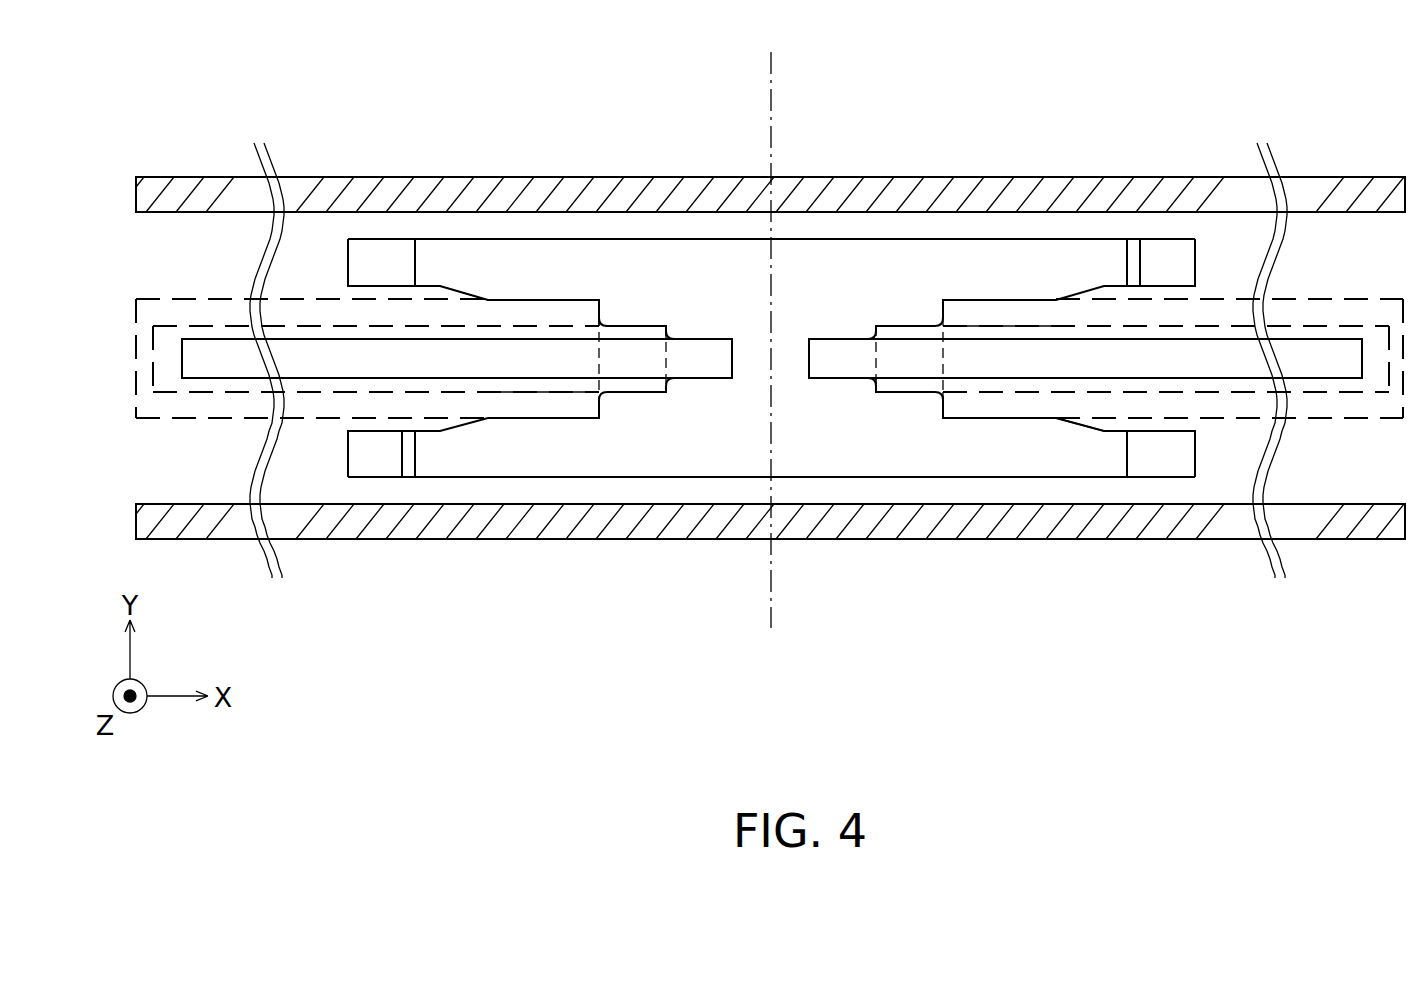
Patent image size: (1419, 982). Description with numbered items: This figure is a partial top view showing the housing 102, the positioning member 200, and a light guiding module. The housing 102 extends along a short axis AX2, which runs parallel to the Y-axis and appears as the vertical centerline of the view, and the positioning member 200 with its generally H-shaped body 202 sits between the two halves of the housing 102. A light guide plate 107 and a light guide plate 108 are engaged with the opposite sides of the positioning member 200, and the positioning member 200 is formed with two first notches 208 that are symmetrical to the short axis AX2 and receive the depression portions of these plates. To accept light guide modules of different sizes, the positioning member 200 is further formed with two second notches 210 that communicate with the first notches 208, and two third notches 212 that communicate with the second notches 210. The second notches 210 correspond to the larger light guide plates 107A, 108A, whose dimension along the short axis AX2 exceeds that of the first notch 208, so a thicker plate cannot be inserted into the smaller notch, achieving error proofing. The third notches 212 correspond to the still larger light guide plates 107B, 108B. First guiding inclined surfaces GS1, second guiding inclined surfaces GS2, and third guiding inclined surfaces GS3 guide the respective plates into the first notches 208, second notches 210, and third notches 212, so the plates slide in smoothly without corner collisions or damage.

The short axis AX2 is at (772, 324).
The housing 102 is at (1112, 196).
The light guide plate 107 is at (700, 360).
The light guide plate 107A is at (538, 393).
The light guide plate 107B is at (378, 418).
The light guide plate 108 is at (838, 357).
The light guide plate 108A is at (1012, 322).
The light guide plate 108B is at (1205, 295).
The positioning member 200 is at (922, 238).
The body 202 is at (625, 447).
The first notches 208 is at (709, 338).
The second notches 210 is at (641, 325).
The third notches 212 is at (536, 299).
The first guiding inclined surfaces GS1 is at (668, 336).
The second guiding inclined surfaces GS2 is at (602, 322).
The third guiding inclined surfaces GS3 is at (470, 293).